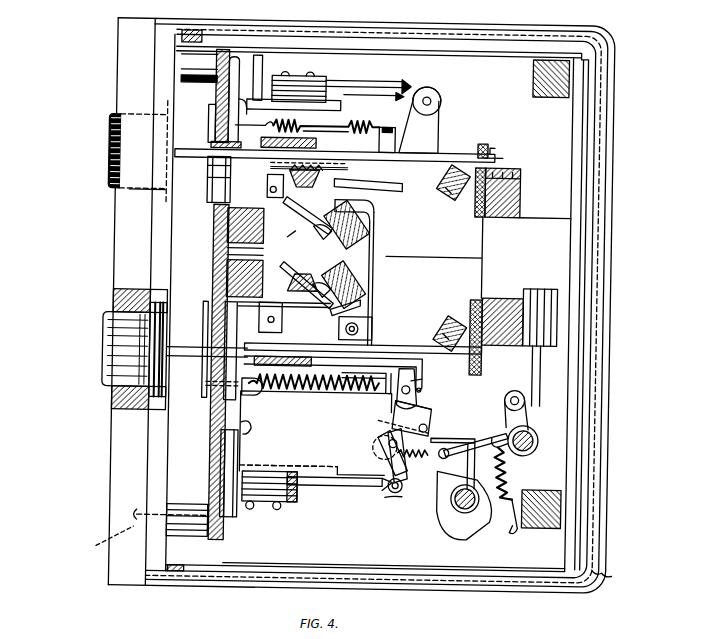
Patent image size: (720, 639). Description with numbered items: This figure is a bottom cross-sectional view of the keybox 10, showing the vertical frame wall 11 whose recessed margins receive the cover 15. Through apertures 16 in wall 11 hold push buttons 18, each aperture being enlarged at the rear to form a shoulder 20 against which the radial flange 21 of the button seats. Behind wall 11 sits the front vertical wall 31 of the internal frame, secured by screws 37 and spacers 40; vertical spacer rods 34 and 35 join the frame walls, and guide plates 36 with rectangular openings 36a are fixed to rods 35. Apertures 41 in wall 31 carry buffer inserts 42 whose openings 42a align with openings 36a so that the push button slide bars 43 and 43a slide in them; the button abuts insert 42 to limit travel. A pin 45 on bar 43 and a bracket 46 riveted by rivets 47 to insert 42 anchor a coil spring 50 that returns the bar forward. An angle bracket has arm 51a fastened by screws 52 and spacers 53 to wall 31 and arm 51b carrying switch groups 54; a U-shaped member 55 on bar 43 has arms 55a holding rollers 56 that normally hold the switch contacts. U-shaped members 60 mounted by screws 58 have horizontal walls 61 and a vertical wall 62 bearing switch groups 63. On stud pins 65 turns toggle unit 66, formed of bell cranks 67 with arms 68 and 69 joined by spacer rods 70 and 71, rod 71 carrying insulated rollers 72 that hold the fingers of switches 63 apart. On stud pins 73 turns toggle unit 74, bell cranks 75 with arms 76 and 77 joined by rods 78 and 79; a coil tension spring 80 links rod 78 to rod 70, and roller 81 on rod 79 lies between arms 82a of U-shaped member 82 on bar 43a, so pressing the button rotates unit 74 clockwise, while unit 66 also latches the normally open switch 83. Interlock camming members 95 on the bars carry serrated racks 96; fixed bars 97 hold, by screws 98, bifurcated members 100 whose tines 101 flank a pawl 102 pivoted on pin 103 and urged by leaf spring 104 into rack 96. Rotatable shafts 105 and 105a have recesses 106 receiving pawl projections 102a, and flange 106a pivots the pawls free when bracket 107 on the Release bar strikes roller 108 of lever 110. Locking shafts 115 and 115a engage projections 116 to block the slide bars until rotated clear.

The keybox 10 is at (624, 236).
The vertical frame wall 11 is at (120, 464).
The cover 15 is at (616, 572).
The through apertures 16 is at (126, 196).
The push button 18 is at (107, 150).
The shoulder 20 is at (115, 304).
The radial flange 21 is at (152, 292).
The front vertical wall 31 is at (220, 50).
The vertical spacer rod 34 is at (547, 96).
The vertical spacer rod 35 is at (520, 200).
The guide plate 36 is at (484, 142).
The rectangular opening 36a is at (493, 157).
The screw 37 is at (100, 550).
The spacer 40 is at (187, 505).
The aperture 41 is at (226, 109).
The buffer insert 42 is at (206, 200).
The rectangular opening 42a is at (216, 152).
The push button slide bar 43 is at (440, 156).
The push button slide bar 43a is at (405, 350).
The pin 45 is at (386, 128).
The bracket 46 is at (262, 144).
The rivet 47 is at (224, 107).
The coil spring 50 is at (354, 126).
The arm 51a is at (272, 77).
The arm 51b is at (360, 97).
The screw 52 is at (237, 62).
The spacer 53 is at (250, 62).
The switch group 54 is at (397, 80).
The U-shaped member 55 is at (436, 125).
The arm 55a is at (428, 114).
The roller 56 is at (433, 88).
The screw 58 is at (252, 435).
The U-shaped member 60 is at (326, 438).
The horizontal wall 61 is at (374, 469).
The vertical wall 62 is at (326, 467).
The switch group 63 is at (326, 500).
The stud pin 65 is at (384, 432).
The toggle unit 66 is at (452, 437).
The bell crank 67 is at (465, 460).
The arm 68 is at (408, 492).
The arm 69 is at (500, 450).
The spacer rod 70 is at (452, 442).
The spacer rod 71 is at (388, 497).
The insulated roller 72 is at (400, 493).
The stud pin 73 is at (440, 427).
The toggle unit 74 is at (438, 400).
The bell crank 75 is at (404, 418).
The arm 76 is at (386, 398).
The arm 77 is at (380, 448).
The spacer rod 78 is at (421, 427).
The spacer rod 79 is at (422, 381).
The coil tension spring 80 is at (413, 458).
The roller 81 is at (409, 376).
The U-shaped member 82 is at (333, 385).
The arm 82a is at (420, 379).
The switch 83 is at (526, 384).
The interlock camming member 95 is at (210, 170).
The serrated rack 96 is at (352, 133).
The vertical fixed bar 97 is at (218, 266).
The screw 98 is at (292, 212).
The bi-furcated member 100 is at (292, 237).
The tine 101 is at (217, 183).
The pawl 102 is at (318, 172).
The projection 102a is at (334, 184).
The pin 103 is at (268, 196).
The leaf spring 104 is at (301, 252).
The rotatable shaft 105 is at (364, 212).
The rotatable shaft 105a is at (340, 262).
The longitudinal recess 106 is at (327, 231).
The flange 106a is at (344, 193).
The bracket 107 is at (372, 318).
The roller 108 is at (380, 317).
The lever 110 is at (384, 277).
The push button locking shaft 115 is at (452, 316).
The push button locking shaft 115a is at (458, 200).
The projection 116 is at (448, 190).